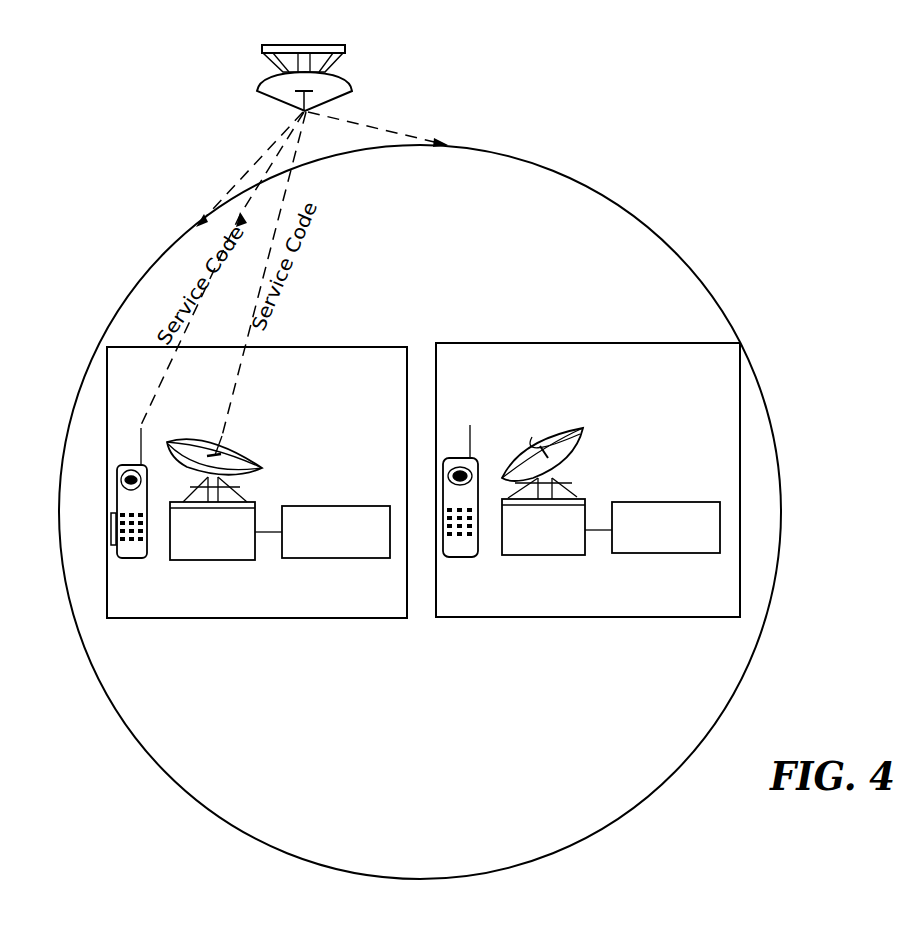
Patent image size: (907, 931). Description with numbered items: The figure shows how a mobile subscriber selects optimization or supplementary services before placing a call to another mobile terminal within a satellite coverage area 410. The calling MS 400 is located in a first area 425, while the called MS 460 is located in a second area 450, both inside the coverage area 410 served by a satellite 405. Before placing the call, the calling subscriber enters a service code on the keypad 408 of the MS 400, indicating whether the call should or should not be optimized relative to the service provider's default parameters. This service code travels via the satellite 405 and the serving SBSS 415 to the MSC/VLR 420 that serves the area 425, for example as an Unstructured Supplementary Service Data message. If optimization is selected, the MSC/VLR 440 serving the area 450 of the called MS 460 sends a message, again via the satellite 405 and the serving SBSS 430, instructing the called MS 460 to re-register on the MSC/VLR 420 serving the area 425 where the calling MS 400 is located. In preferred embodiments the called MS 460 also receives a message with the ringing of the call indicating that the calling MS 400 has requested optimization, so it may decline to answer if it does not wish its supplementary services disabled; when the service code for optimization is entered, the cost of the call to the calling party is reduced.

The mobile station 400 is at (146, 559).
The satellite 405 is at (338, 58).
The keypad 408 is at (112, 530).
The satellite coverage area 410 is at (420, 512).
The serving SBSS 415 is at (218, 560).
The MSC/VLR 420 is at (328, 506).
The area 425 is at (398, 613).
The serving SBSS 430 is at (548, 555).
The MSC/VLR 440 is at (658, 502).
The area 450 is at (728, 608).
The mobile station 460 is at (478, 556).